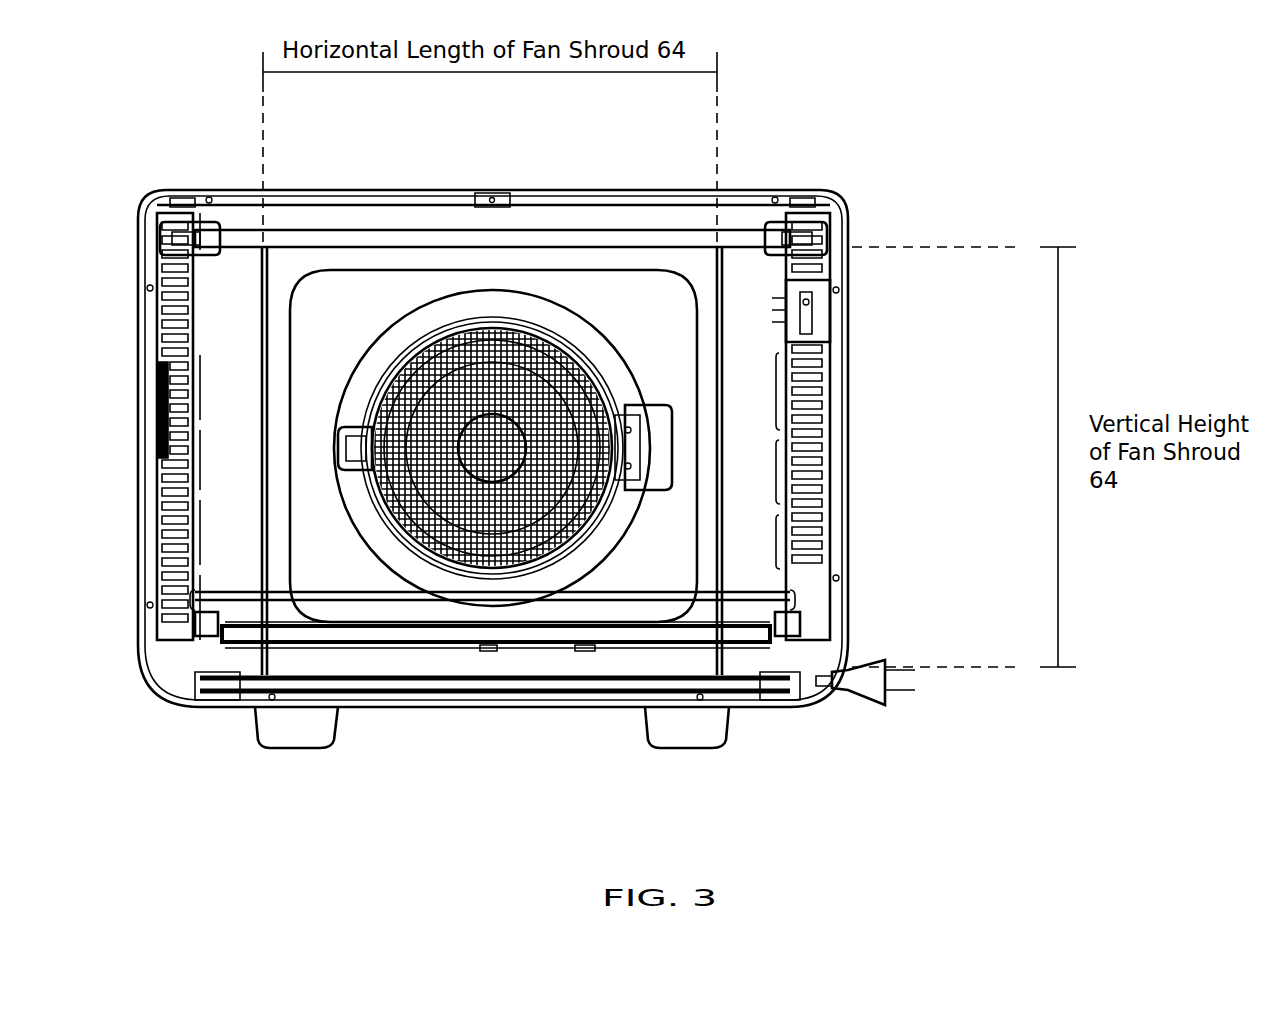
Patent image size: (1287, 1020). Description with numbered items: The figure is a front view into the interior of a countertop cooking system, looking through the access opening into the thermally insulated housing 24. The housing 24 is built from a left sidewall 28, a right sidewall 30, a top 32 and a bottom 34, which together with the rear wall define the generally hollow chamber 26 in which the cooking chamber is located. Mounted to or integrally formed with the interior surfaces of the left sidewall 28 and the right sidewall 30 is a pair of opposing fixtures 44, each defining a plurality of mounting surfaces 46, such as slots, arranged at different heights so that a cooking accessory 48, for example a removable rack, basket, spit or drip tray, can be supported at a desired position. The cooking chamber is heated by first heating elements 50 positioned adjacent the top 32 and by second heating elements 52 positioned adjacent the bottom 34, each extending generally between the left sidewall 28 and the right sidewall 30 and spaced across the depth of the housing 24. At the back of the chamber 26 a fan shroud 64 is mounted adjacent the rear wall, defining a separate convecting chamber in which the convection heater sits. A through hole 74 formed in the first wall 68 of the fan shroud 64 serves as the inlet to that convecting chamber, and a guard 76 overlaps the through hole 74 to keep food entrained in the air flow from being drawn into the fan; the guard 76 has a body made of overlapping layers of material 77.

The housing 24 is at (139, 184).
The chamber 26 is at (762, 338).
The left sidewall 28 is at (140, 330).
The right sidewall 30 is at (848, 420).
The top 32 is at (438, 190).
The bottom 34 is at (508, 707).
The fixture 44 is at (200, 405).
The mounting surfaces 46 is at (205, 392).
The cooking accessory 48 is at (243, 600).
The first heating element 50 is at (692, 236).
The second heating element 52 is at (250, 645).
The fan shroud 64 is at (345, 256).
The first wall 68 is at (615, 258).
The through hole 74 is at (598, 535).
The guard 76 is at (540, 360).
The layer of material 77 is at (571, 393).